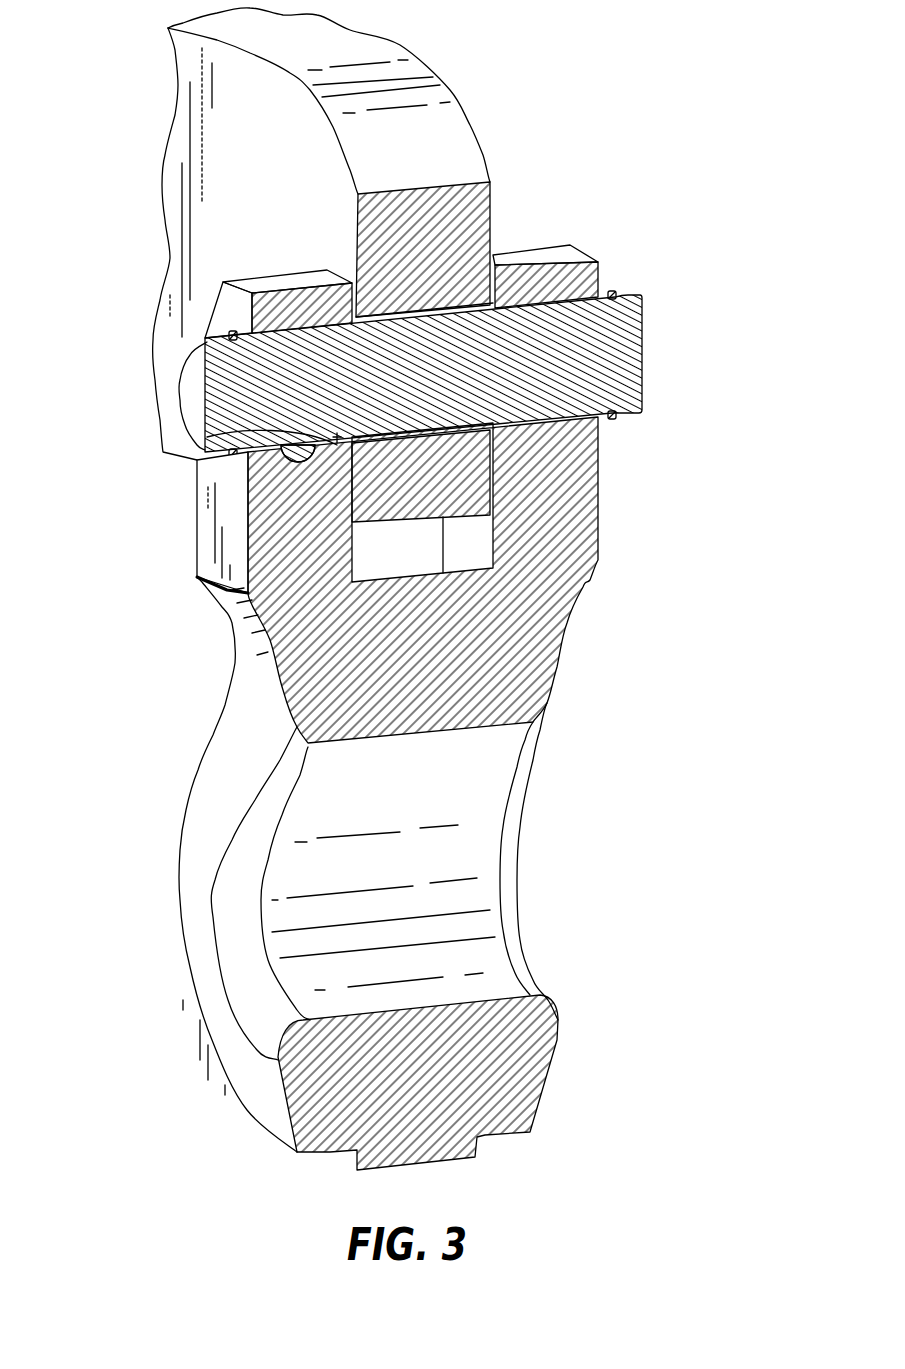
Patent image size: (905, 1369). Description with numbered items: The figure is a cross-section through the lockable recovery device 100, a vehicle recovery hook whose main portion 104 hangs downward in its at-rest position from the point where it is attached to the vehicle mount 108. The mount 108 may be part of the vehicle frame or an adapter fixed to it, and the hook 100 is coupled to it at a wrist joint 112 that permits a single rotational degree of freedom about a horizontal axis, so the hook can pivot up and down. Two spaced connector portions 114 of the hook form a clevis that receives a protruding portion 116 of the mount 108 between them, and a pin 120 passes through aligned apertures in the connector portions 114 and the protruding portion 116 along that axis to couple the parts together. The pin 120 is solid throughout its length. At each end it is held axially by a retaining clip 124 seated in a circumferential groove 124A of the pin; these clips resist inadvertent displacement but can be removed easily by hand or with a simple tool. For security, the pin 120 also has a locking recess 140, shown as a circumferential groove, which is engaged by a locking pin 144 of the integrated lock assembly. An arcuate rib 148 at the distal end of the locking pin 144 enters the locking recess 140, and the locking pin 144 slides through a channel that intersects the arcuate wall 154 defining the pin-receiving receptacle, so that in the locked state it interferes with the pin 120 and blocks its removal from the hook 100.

The lockable recovery device 100 is at (119, 737).
The main portion 104 is at (195, 855).
The vehicle mount 108 is at (177, 146).
The wrist joint 112 is at (665, 329).
The connector portions 114 is at (543, 247).
The protruding portion 116 is at (438, 155).
The pin 120 is at (541, 373).
The retaining clip 124 is at (613, 293).
The circumferential groove 124A is at (612, 417).
The locking recess 140 is at (296, 337).
The locking pin 144 is at (297, 478).
The arcuate rib 148 is at (207, 437).
The wall 154 is at (336, 438).